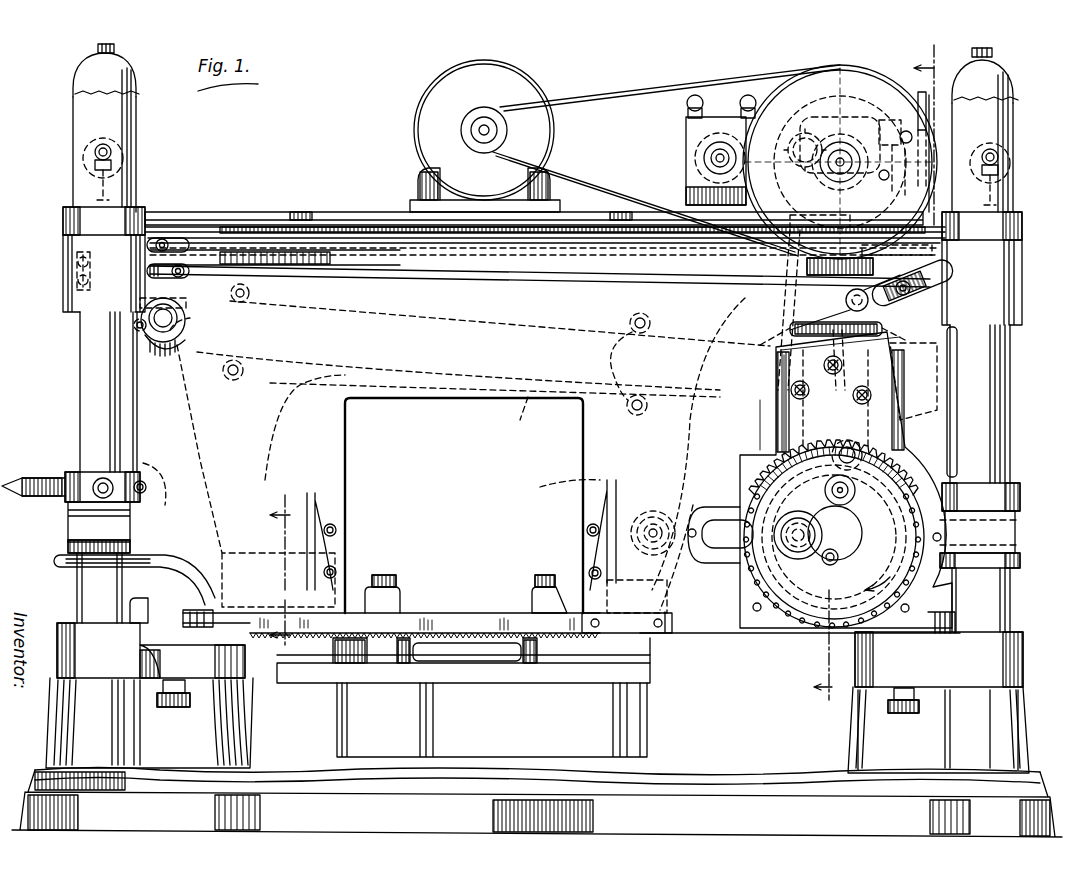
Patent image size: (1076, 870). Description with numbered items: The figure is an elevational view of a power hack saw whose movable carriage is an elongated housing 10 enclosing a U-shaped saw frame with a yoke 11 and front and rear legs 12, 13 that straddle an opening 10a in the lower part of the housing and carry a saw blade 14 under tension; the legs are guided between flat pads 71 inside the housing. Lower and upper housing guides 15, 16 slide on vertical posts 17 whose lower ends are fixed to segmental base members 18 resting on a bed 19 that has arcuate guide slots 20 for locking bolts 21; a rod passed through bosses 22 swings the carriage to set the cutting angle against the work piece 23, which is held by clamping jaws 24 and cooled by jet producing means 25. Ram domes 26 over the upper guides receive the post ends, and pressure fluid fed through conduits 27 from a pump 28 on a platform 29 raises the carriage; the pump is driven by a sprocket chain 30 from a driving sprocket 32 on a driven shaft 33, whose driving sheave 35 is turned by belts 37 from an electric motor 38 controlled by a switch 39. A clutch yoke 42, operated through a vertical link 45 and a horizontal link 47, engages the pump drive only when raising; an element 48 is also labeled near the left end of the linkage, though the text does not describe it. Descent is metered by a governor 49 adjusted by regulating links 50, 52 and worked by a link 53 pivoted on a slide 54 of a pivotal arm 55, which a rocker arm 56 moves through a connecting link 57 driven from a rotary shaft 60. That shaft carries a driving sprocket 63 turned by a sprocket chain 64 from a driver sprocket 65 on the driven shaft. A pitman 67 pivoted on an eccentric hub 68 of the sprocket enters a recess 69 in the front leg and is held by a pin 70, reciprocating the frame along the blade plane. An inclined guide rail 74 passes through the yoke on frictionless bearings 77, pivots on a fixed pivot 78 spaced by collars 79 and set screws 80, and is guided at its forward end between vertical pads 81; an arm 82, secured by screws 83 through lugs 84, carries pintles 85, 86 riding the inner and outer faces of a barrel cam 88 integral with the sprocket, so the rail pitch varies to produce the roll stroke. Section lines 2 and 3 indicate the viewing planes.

The section line 2- 2 is at (881, 381).
The section line 3- 3 is at (280, 579).
The housing 10 is at (160, 405).
The opening 10a is at (428, 398).
The yoke 11 is at (528, 397).
The front leg 12 is at (557, 487).
The rear leg 13 is at (265, 478).
The saw blade 14 is at (472, 612).
The lower housing guide 15 is at (70, 470).
The upper housing guide 16 is at (68, 297).
The vertical post 17 is at (85, 418).
The segmental base member 18 is at (75, 625).
The bed 19 is at (1010, 785).
The guide slot 20 is at (183, 707).
The locking bolt 21 is at (930, 635).
The boss 22 is at (1010, 532).
The work piece 23 is at (505, 673).
The clamping jaw 24 is at (397, 585).
The jet producing means 25 is at (337, 570).
The ram dome 26 is at (88, 115).
The conduit 27 is at (88, 182).
The pump 28 is at (690, 138).
The platform 29 is at (250, 214).
The sprocket chain 30 is at (805, 78).
The driving sprocket 32 is at (832, 120).
The driven shaft 33 is at (840, 162).
The driving sheave 35 is at (745, 100).
The driving belt 37 is at (635, 92).
The electric motor 38 is at (425, 100).
The switch 39 is at (75, 268).
The clutch yoke 42 is at (794, 152).
The vertical link 45 is at (126, 543).
The horizontal link 47 is at (555, 255).
The rail ends 48 is at (130, 283).
The governor 49 is at (918, 92).
The regulating link 50 is at (735, 300).
The regulating link 52 is at (325, 238).
The link 53 is at (905, 255).
The slide 54 is at (925, 290).
The pivotal arm 55 is at (905, 300).
The rocker arm 56 is at (845, 300).
The connecting link 57 is at (905, 437).
The rotary shaft 60 is at (830, 538).
The driving sprocket 63 is at (830, 596).
The sprocket chain 64 is at (760, 580).
The driver sprocket 65 is at (820, 225).
The pitman 67 is at (752, 530).
The eccentric hub 68 is at (800, 553).
The recess 69 is at (669, 533).
The pin 70 is at (650, 520).
The pad 71 is at (215, 555).
The guide rail 74 is at (335, 312).
The frictionless bearing 77 is at (250, 293).
The fixed pivot 78 is at (157, 322).
The collar 79 is at (177, 337).
The set screw 80 is at (180, 312).
The vertical pad 81 is at (957, 348).
The arm 82 is at (915, 422).
The screw 83 is at (810, 390).
The lug 84 is at (832, 345).
The pintle 85 is at (855, 502).
The pintle 86 is at (843, 470).
The barrel cam 88 is at (918, 588).